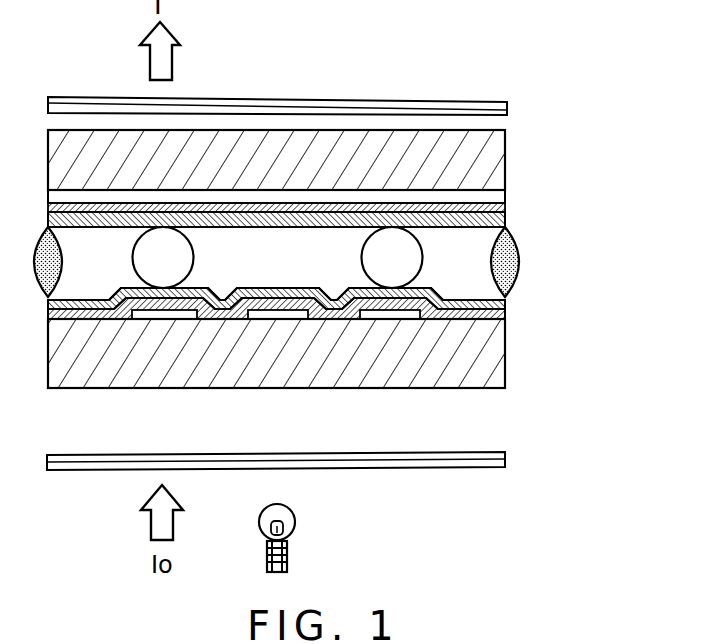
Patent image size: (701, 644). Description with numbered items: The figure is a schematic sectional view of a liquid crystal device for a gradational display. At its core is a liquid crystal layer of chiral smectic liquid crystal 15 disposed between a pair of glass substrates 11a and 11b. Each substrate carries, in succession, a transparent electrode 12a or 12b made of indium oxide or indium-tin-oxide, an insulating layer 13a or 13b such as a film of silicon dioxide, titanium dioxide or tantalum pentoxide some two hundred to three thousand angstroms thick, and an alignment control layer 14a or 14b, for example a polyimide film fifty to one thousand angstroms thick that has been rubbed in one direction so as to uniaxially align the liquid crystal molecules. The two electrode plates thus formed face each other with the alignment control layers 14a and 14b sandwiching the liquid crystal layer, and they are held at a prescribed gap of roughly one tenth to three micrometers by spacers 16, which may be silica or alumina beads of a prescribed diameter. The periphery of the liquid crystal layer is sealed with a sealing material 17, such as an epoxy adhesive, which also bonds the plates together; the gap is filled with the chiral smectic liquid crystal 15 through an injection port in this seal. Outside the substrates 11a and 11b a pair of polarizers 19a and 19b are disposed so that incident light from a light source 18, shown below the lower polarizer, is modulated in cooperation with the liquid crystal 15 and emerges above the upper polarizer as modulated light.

The glass substrate 11a is at (490, 157).
The glass substrate 11b is at (492, 357).
The transparent electrode 12a is at (497, 199).
The transparent electrode 12b is at (392, 320).
The insulating layer 13a is at (497, 212).
The insulating layer 13b is at (497, 318).
The alignment control layer 14a is at (500, 223).
The alignment control layer 14b is at (497, 306).
The chiral smectic liquid crystal 15 is at (272, 250).
The spacer 16 is at (387, 245).
The sealing material 17 is at (512, 268).
The light source 18 is at (297, 522).
The polarizer 19a is at (83, 106).
The polarizer 19b is at (82, 462).